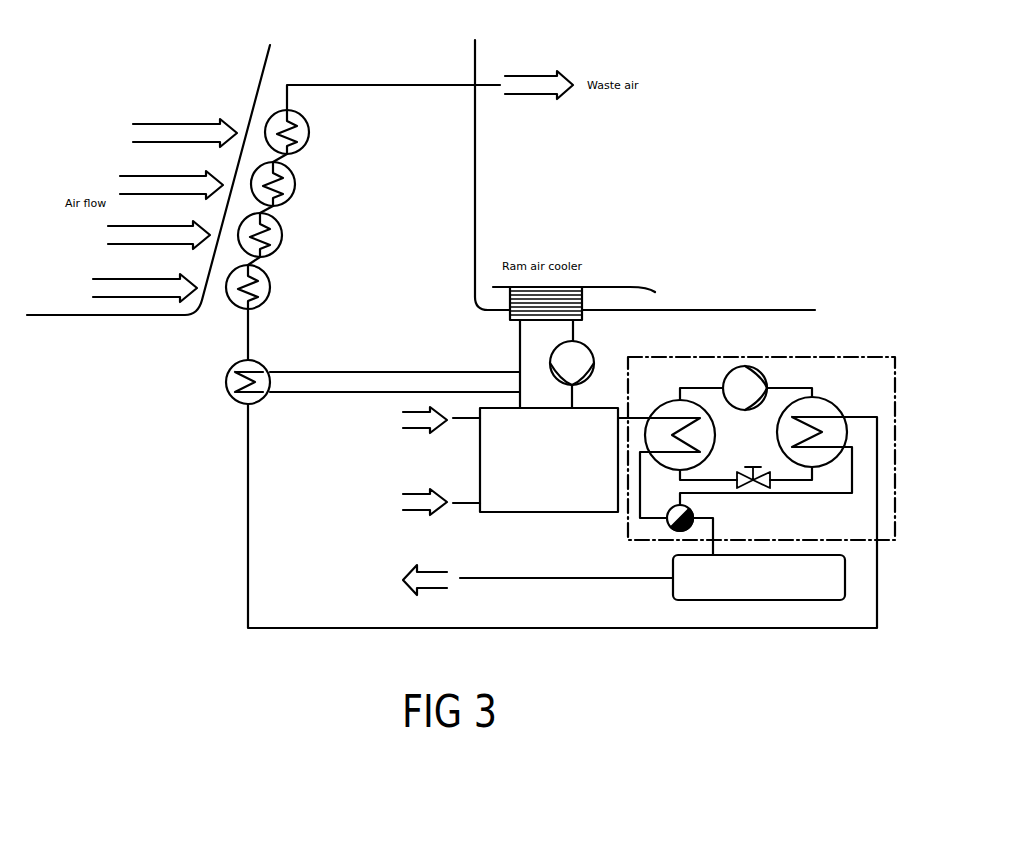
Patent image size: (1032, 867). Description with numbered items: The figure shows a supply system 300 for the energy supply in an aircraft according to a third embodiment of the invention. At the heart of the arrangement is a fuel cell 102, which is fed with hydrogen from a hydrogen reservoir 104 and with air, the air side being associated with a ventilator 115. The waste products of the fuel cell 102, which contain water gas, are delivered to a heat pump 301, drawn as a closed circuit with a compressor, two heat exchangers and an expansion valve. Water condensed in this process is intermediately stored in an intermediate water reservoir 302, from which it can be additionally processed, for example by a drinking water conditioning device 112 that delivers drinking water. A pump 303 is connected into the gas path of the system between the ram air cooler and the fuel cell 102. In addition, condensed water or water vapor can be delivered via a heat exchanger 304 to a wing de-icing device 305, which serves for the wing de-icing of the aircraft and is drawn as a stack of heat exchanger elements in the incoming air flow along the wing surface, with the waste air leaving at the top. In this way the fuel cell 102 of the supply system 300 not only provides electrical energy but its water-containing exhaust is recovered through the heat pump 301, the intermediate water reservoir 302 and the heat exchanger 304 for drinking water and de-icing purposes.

The supply system 300 is at (755, 109).
The heat pump 301 is at (863, 357).
The intermediate water reservoir 302 is at (672, 588).
The pump 303 is at (590, 348).
The heat exchanger 304 is at (227, 385).
The wing de-icing device 305 is at (295, 186).
The fuel cell 102 is at (480, 443).
The hydrogen reservoir 104 is at (347, 507).
The drinking water conditioning device 112 is at (342, 577).
The ventilator 115 is at (333, 417).